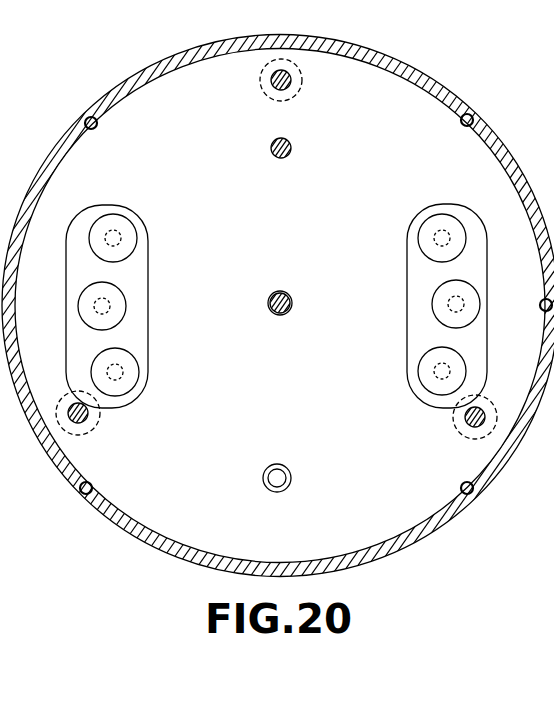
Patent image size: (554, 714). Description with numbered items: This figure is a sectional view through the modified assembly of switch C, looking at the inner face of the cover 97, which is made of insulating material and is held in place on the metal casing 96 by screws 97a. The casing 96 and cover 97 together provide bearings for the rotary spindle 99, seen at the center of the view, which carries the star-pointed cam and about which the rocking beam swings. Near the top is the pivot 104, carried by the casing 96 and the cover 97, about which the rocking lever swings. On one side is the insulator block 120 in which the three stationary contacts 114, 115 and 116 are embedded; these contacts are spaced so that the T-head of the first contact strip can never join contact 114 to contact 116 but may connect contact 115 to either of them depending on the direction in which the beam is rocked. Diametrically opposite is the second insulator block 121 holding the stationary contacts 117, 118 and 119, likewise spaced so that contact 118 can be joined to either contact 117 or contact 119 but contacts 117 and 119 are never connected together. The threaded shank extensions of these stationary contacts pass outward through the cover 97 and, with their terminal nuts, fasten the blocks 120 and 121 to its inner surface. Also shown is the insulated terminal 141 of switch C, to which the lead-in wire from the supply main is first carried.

The metal casing 96 is at (308, 33).
The cover 97 is at (365, 78).
The screws 97a is at (88, 417).
The rotary spindle 99 is at (291, 297).
The pivot 104 is at (289, 144).
The stationary contact 114 is at (425, 232).
The stationary contact 115 is at (435, 303).
The stationary contact 116 is at (427, 373).
The stationary contact 117 is at (133, 367).
The stationary contact 118 is at (122, 297).
The stationary contact 119 is at (133, 235).
The insulator block 120 is at (487, 282).
The second insulator block 121 is at (148, 260).
The insulated terminal 141 is at (288, 473).